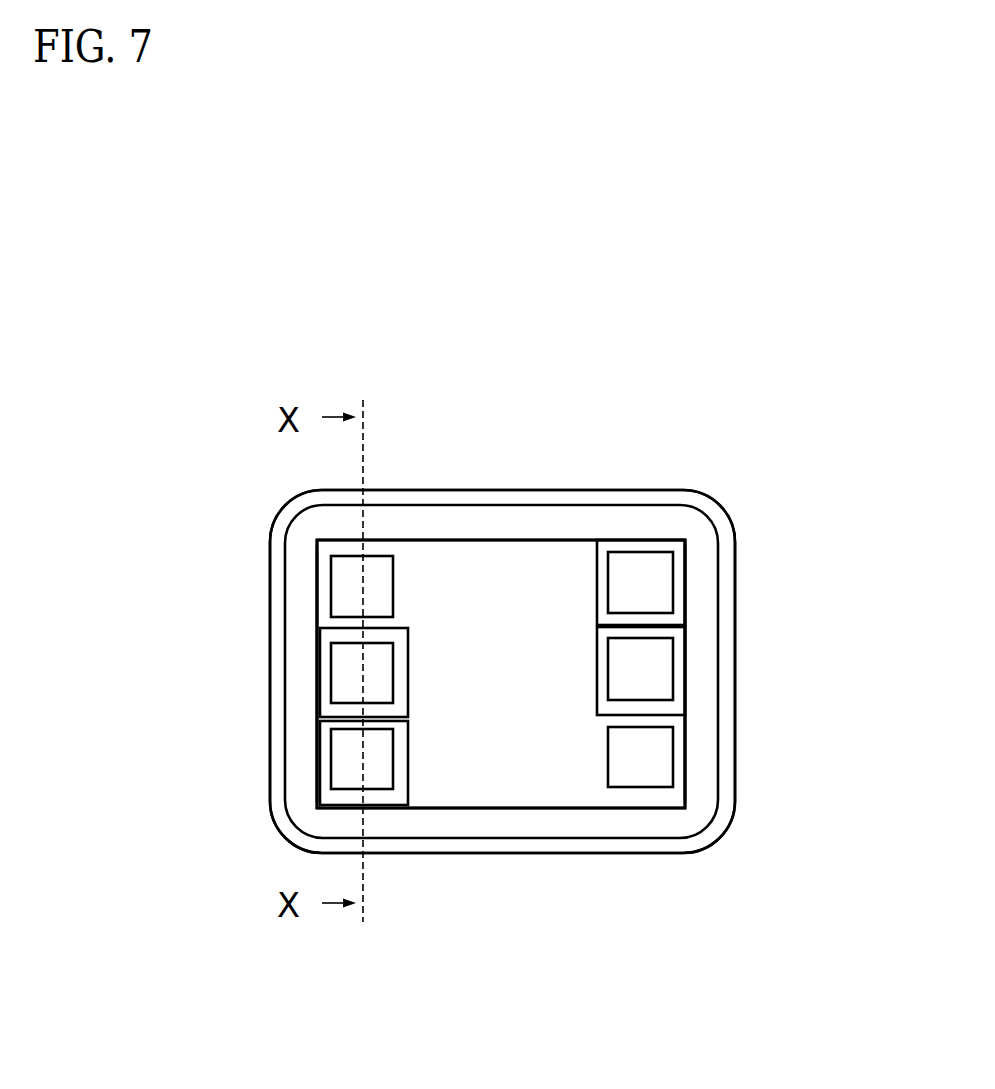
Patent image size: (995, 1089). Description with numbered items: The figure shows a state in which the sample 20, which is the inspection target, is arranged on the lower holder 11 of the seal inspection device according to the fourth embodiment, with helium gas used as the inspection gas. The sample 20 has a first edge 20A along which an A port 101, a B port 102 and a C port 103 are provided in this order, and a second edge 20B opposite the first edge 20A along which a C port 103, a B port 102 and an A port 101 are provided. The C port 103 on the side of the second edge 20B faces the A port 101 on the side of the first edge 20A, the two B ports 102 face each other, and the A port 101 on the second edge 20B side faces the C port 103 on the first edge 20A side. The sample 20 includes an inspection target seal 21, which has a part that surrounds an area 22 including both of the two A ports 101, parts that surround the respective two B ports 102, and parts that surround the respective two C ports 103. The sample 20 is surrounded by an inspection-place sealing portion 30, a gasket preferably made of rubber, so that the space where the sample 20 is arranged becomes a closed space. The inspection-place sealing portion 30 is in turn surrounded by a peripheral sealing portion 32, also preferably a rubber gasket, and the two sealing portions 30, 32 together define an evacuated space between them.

The lower holder 11 is at (715, 923).
The sample 20 is at (522, 525).
The first edge 20A is at (302, 557).
The second edge 20B is at (703, 774).
The inspection target seal 21 is at (422, 535).
The area 22 is at (473, 553).
The inspection-place sealing portion 30 is at (590, 505).
The peripheral sealing portion 32 is at (645, 490).
The A port 101 is at (340, 592).
The B port 102 is at (340, 670).
The C port 103 is at (340, 753).